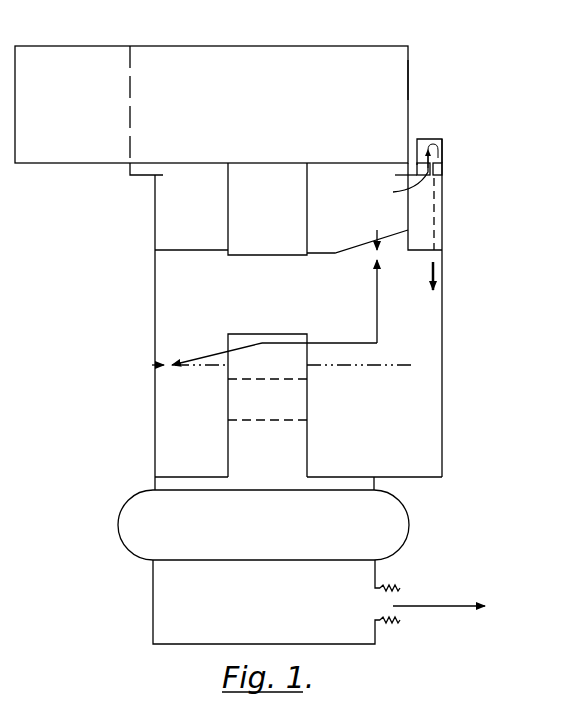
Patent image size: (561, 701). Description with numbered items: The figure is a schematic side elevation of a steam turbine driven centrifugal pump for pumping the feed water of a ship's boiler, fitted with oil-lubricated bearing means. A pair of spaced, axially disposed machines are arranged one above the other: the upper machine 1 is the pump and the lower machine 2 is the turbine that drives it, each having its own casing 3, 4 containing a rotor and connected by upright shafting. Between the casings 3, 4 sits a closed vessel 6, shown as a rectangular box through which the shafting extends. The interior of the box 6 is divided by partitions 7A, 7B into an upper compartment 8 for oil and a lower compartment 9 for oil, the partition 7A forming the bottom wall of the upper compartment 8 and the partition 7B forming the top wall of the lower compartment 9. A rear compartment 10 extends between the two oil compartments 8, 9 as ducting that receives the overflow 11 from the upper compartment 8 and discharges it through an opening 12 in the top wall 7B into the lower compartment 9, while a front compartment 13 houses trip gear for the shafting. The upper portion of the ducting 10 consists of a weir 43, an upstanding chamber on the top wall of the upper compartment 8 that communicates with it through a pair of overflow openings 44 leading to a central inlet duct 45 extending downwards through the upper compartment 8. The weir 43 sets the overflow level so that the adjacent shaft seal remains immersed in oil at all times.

The upper machine 1 is at (411, 82).
The lower machine 2 is at (150, 619).
The casing 3 is at (383, 60).
The casing 4 is at (357, 632).
The closed vessel 6 is at (443, 433).
The partition 7A is at (355, 248).
The partition 7B is at (317, 342).
The upper compartment 8 is at (180, 216).
The lower compartment 9 is at (176, 428).
The rear compartment 10 is at (425, 318).
The overflow 11 is at (420, 254).
The opening 12 is at (412, 340).
The front compartment 13 is at (193, 291).
The weir 43 is at (445, 152).
The overflow opening 44 is at (436, 173).
The central inlet duct 45 is at (422, 237).